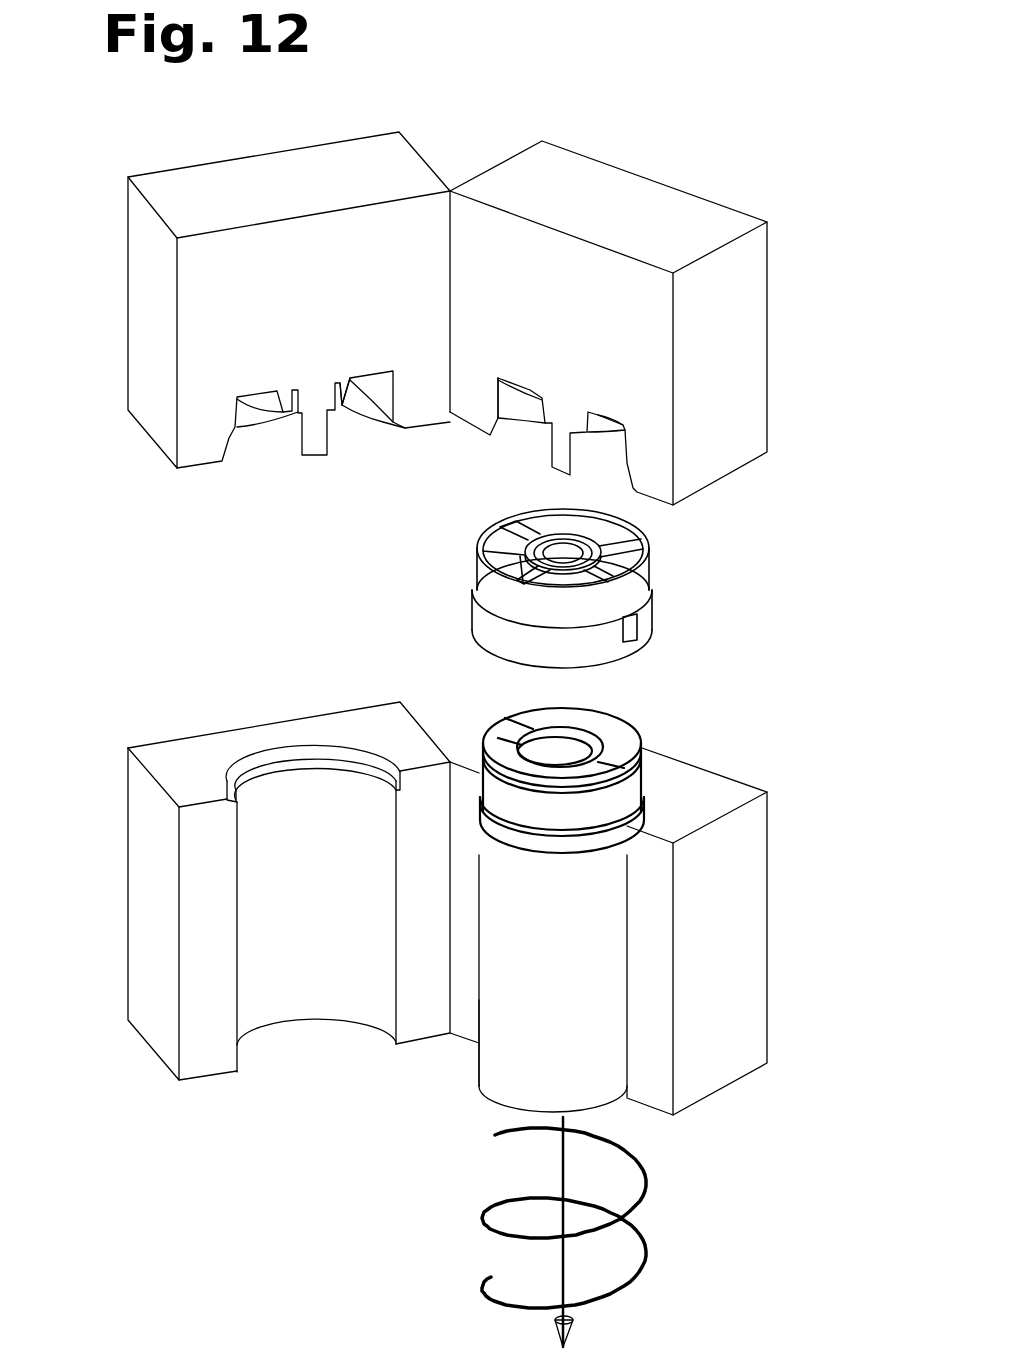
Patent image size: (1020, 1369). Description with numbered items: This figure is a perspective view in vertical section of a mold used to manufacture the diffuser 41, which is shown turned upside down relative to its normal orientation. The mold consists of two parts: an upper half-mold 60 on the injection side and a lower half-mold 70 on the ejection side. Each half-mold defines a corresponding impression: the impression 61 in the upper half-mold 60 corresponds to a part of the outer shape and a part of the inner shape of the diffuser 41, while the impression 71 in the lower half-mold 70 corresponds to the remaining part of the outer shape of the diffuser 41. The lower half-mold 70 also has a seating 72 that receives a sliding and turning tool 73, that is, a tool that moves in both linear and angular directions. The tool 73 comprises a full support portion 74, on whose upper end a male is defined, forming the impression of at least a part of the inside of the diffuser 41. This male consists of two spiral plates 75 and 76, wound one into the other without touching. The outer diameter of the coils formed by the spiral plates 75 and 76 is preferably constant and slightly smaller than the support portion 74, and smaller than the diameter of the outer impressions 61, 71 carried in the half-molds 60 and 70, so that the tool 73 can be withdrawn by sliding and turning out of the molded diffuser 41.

The upper half-mold 60 is at (413, 141).
The impression 61 is at (510, 428).
The diffuser 41 is at (664, 598).
The lower half-mold 70 is at (413, 923).
The impression 71 is at (280, 757).
The seating 72 is at (247, 954).
The sliding and turning tool 73 is at (484, 1088).
The full support portion 74 is at (598, 1065).
The spiral plate 75 is at (613, 723).
The spiral plate 76 is at (496, 738).